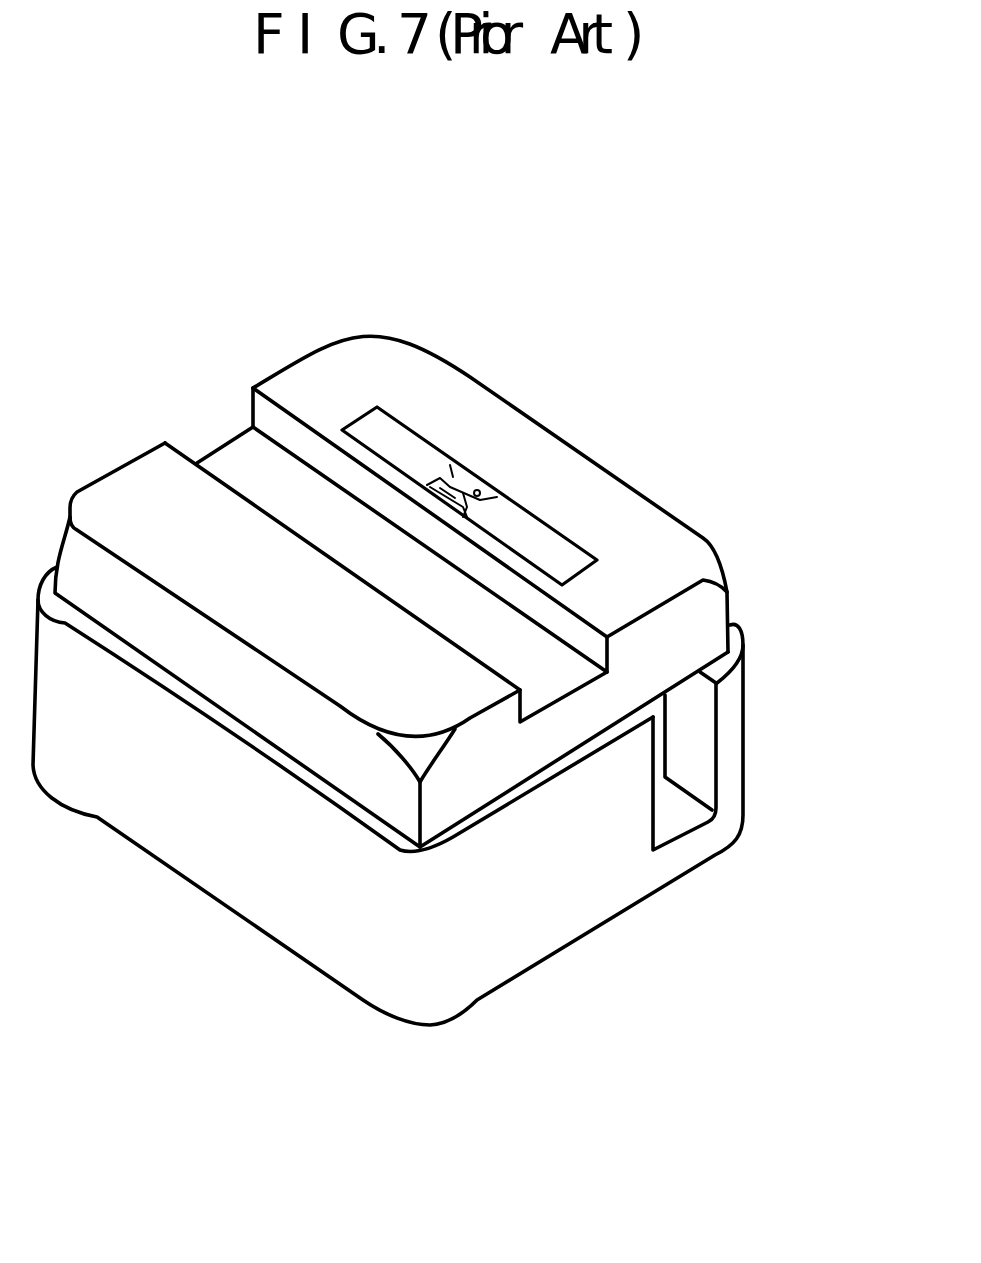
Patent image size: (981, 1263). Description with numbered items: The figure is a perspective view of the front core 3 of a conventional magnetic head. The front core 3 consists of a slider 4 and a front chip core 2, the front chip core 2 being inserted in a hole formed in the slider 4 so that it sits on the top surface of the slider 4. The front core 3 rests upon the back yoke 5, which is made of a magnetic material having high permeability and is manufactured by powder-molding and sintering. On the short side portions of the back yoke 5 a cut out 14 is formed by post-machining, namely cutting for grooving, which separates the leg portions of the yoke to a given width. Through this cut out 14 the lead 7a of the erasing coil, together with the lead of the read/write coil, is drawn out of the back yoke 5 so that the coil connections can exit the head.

The front chip core 2 is at (368, 430).
The front core 3 is at (490, 443).
The slider 4 is at (415, 360).
The back yoke 5 is at (602, 910).
The lead of the erasing coil 7a is at (657, 783).
The cut out 14 is at (690, 718).